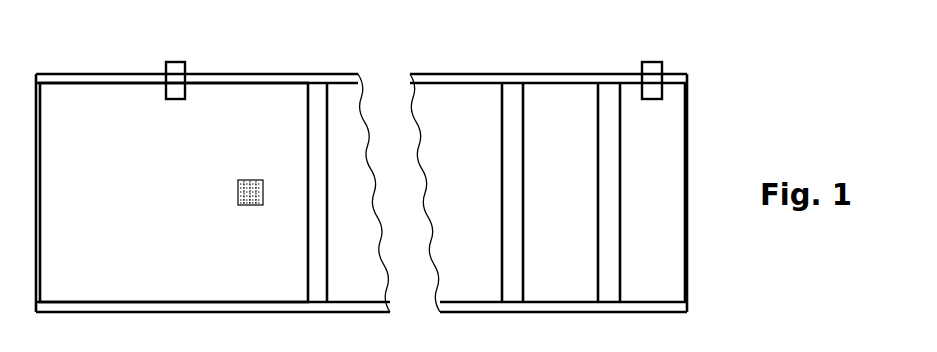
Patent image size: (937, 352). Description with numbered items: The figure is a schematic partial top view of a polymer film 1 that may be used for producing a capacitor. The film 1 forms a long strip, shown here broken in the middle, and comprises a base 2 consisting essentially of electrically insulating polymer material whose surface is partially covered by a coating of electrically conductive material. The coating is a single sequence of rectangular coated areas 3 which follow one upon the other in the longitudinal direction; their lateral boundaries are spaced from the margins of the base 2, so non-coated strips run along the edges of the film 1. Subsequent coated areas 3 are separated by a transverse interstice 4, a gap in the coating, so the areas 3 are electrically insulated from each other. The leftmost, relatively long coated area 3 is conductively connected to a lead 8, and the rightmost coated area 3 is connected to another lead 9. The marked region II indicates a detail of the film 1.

The film 1 is at (320, 60).
The base 2 is at (63, 120).
The coated areas 3 is at (95, 188).
The transverse interstice 4 is at (318, 188).
The lead 8 is at (175, 78).
The lead 9 is at (653, 78).
The detail region II is at (250, 190).